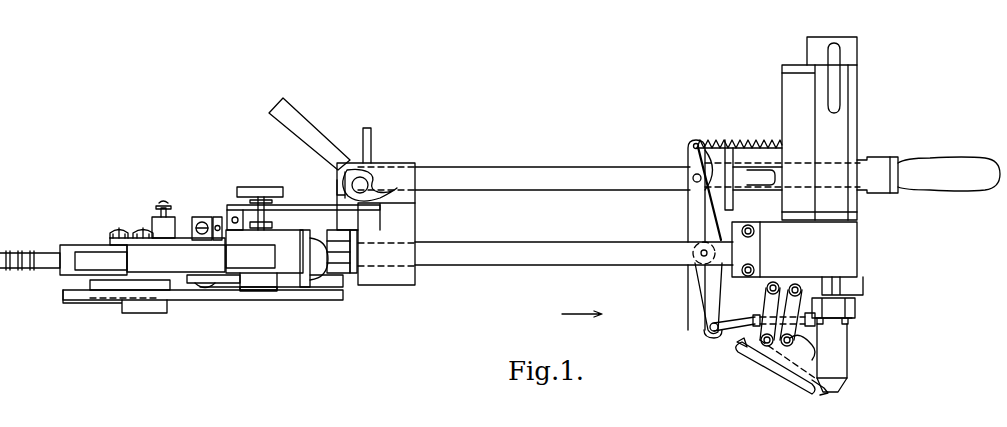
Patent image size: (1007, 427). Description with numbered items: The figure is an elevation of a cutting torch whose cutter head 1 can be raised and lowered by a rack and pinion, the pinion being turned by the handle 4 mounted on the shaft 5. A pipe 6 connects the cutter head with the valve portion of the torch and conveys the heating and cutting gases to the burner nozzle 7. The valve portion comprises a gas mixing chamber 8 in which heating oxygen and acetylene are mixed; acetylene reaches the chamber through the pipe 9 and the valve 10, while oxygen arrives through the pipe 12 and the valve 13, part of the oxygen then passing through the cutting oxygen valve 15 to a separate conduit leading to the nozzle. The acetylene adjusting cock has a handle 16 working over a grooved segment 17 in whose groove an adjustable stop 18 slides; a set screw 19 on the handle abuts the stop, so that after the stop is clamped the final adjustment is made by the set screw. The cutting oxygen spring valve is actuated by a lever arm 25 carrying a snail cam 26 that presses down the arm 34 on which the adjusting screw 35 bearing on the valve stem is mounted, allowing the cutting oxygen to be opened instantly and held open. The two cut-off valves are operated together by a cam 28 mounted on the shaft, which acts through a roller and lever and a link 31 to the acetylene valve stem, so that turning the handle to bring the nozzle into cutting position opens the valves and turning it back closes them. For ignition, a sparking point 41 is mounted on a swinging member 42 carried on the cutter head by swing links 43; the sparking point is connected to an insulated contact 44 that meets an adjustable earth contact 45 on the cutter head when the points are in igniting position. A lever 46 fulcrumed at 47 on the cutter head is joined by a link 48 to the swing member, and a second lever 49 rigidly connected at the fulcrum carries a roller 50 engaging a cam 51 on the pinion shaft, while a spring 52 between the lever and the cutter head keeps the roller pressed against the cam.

The cutter head 1 is at (845, 252).
The handle 4 is at (925, 176).
The shaft 5 is at (636, 180).
The pipe 6 is at (605, 253).
The burner nozzle 7 is at (835, 354).
The gas mixing chamber 8 is at (288, 267).
The pipe 9 is at (45, 257).
The valve 10 is at (117, 232).
The pipe 12 is at (95, 262).
The valve 13 is at (143, 232).
The cutting oxygen valve 15 is at (258, 225).
The handle 16 is at (202, 221).
The grooved segment 17 is at (173, 239).
The adjustable stop 18 is at (165, 222).
The set screw 19 is at (222, 215).
The lever arm 25 is at (322, 145).
The snail cam 26 is at (390, 185).
The cam 28 is at (353, 221).
The link 31 is at (218, 296).
The arm 34 is at (307, 204).
The adjusting screw 35 is at (262, 188).
The sparking point 41 is at (823, 392).
The swinging member 42 is at (778, 370).
The swing links 43 is at (760, 340).
The insulated contact 44 is at (779, 288).
The adjustable earth contact 45 is at (823, 320).
The lever 46 is at (712, 288).
The fulcrum 47 is at (700, 250).
The link 48 is at (740, 325).
The second lever 49 is at (699, 207).
The roller 50 is at (689, 178).
The cam 51 is at (722, 160).
The spring 52 is at (742, 140).